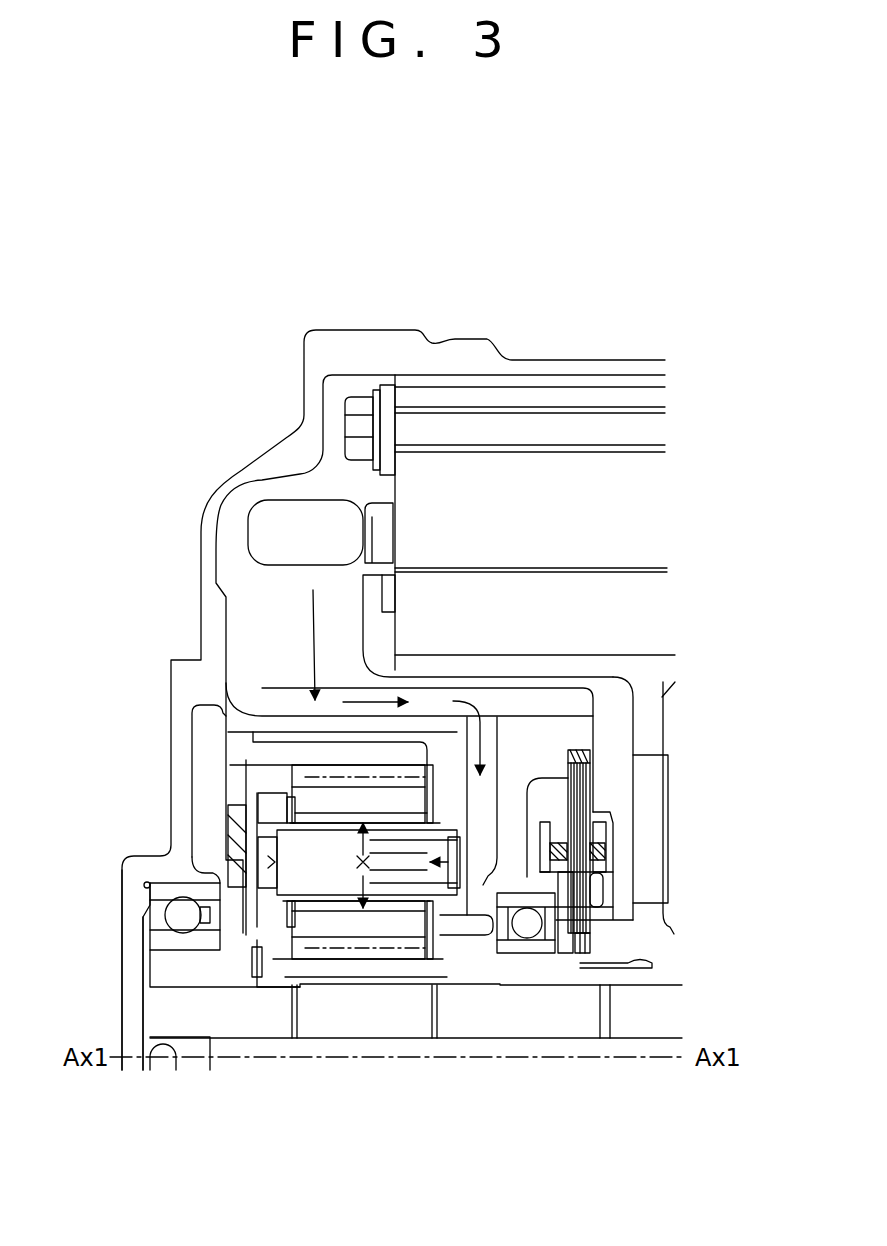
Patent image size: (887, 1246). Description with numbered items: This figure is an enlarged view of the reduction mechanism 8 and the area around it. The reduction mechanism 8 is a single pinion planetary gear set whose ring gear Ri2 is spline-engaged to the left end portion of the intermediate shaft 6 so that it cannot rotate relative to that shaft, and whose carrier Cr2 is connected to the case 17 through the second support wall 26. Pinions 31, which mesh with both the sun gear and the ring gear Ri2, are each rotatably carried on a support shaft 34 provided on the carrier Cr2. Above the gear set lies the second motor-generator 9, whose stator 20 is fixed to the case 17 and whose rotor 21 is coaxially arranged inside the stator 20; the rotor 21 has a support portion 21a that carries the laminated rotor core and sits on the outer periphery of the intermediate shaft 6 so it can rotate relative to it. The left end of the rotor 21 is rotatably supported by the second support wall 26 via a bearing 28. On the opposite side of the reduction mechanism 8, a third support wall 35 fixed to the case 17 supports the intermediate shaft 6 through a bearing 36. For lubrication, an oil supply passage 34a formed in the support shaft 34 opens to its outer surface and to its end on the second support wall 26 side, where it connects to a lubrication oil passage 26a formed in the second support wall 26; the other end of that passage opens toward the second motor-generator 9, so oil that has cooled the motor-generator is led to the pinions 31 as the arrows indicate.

The intermediate shaft 6 is at (642, 1010).
The reduction mechanism 8 is at (268, 688).
The second motor-generator 9 is at (572, 392).
The case 17 is at (223, 477).
The stator 20 is at (440, 468).
The rotor 21 is at (445, 605).
The support portion 21a is at (647, 715).
The second support wall 26 is at (527, 738).
The lubrication oil passage 26a is at (478, 807).
The bearing 28 is at (538, 943).
The pinions 31 is at (267, 803).
The support shaft 34 is at (328, 882).
The oil supply passage 34a is at (393, 868).
The third support wall 35 is at (167, 853).
The bearing 36 is at (150, 884).
The ring gear Ri2 is at (258, 770).
The carrier Cr2 is at (468, 925).